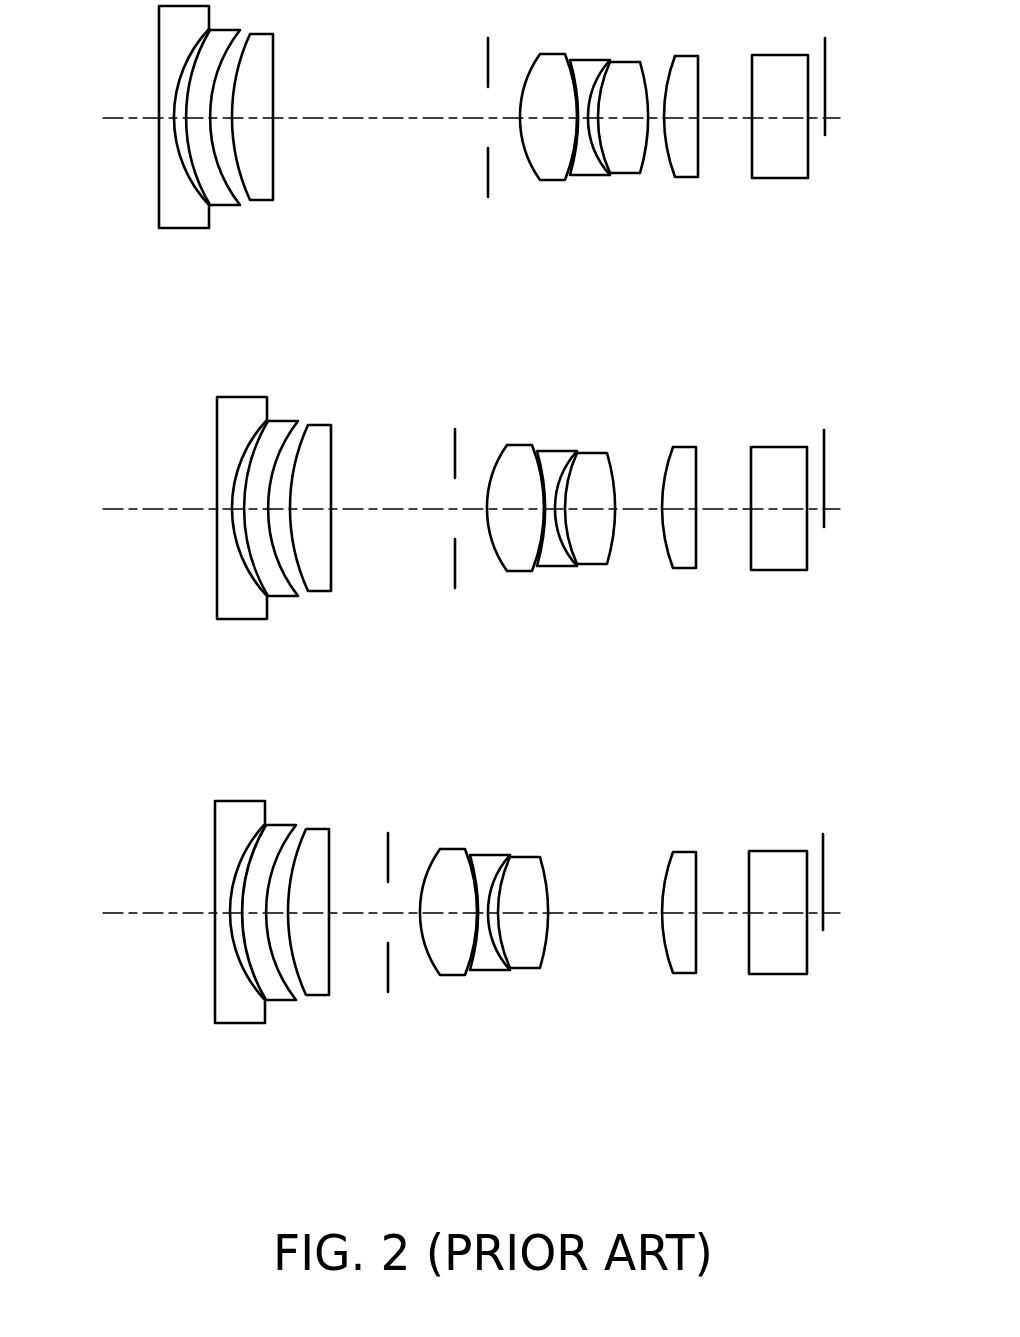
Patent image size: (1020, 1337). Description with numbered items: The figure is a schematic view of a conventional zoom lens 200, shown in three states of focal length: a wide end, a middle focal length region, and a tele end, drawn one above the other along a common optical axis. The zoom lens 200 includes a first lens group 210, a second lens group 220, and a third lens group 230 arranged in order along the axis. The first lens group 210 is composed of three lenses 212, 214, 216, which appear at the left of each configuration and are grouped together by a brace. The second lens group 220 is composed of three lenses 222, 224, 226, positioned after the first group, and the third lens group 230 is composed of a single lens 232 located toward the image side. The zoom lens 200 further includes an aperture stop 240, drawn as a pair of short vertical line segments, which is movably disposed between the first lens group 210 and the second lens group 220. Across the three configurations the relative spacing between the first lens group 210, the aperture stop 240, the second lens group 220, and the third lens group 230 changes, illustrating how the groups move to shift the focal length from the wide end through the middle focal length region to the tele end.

The zoom lens 200 is at (471, 596).
The first lens group 210 is at (254, 570).
The lens 212 is at (183, 221).
The lens 214 is at (228, 201).
The lens 216 is at (262, 193).
The second lens group 220 is at (542, 587).
The lens 222 is at (550, 170).
The lens 224 is at (588, 165).
The lens 226 is at (630, 158).
The third lens group 230 is at (690, 588).
The lens 232 is at (688, 168).
The aperture stop 240 is at (487, 172).